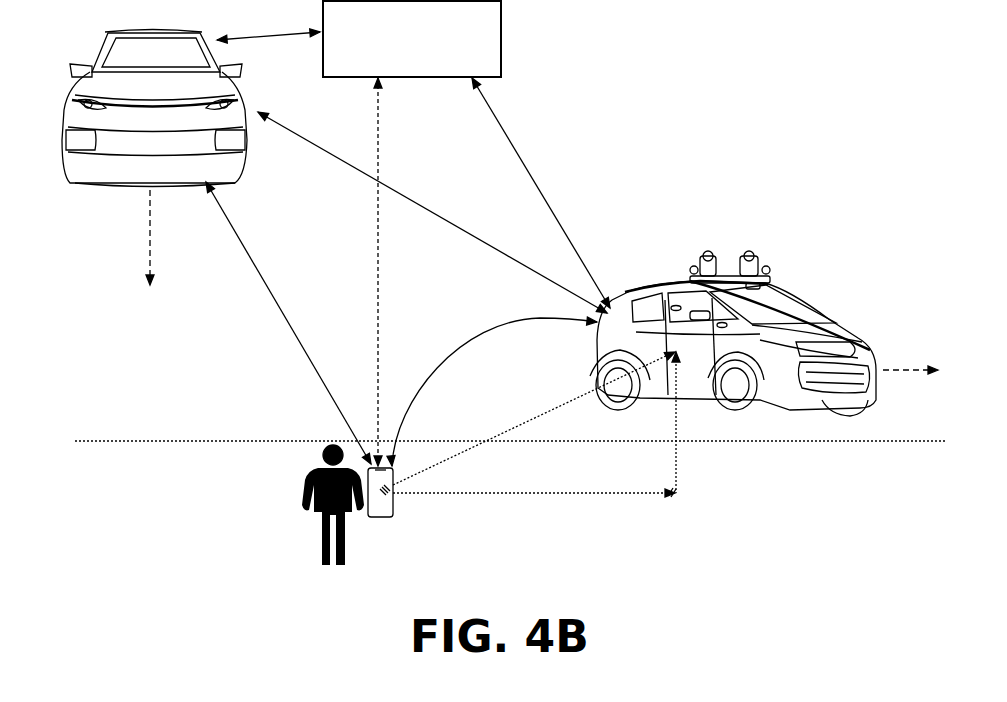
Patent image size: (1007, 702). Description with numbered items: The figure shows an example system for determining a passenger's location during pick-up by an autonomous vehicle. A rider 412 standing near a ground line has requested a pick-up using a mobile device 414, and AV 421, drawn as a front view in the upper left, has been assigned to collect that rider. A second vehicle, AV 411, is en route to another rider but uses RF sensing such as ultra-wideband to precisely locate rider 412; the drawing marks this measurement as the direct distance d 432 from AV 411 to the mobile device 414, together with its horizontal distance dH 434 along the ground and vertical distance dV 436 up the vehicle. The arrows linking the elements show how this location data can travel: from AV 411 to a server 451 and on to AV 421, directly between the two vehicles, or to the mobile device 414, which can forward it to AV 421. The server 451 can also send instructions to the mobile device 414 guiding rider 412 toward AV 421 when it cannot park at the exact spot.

The server 451 is at (501, 27).
The AV 421 is at (247, 123).
The AV 411 is at (803, 300).
The rider 412 is at (323, 528).
The mobile device 414 is at (393, 510).
The distance d 432 is at (534, 418).
The horizontal distance dH 434 is at (534, 504).
The vertical distance dV 436 is at (710, 422).